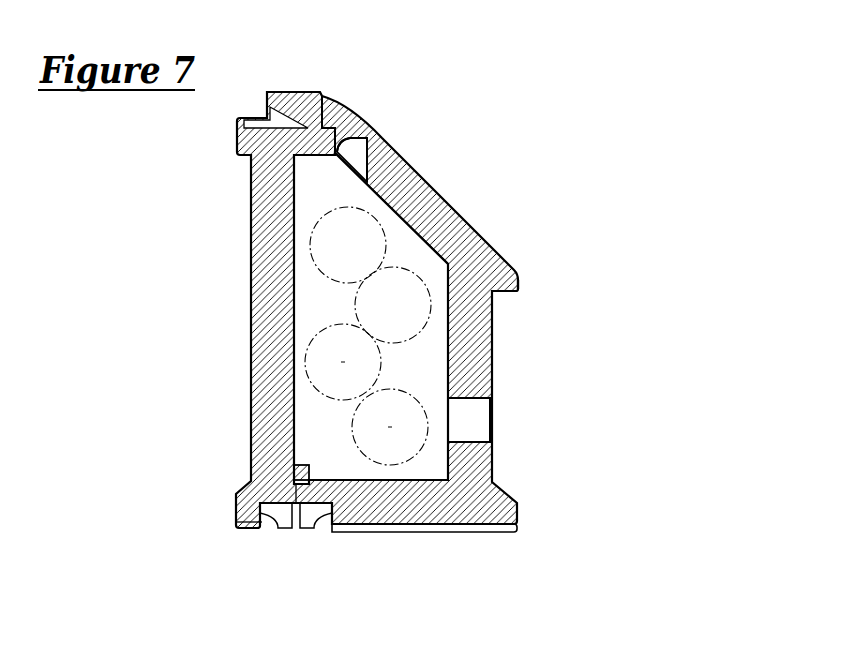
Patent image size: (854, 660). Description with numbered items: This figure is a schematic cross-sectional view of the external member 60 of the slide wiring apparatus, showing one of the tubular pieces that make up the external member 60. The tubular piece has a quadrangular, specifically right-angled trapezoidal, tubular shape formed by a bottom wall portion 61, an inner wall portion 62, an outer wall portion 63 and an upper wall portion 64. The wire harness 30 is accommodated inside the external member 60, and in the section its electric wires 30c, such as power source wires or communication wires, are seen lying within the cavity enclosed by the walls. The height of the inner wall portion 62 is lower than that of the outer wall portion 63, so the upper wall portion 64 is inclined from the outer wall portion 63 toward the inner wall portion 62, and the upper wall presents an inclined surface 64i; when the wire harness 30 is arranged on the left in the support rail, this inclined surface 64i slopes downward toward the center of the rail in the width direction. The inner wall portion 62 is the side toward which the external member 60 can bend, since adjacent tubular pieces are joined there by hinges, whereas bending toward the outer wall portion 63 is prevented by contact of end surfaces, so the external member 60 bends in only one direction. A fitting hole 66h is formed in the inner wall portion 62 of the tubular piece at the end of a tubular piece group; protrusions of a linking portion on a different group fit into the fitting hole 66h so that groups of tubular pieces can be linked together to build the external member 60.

The external member 60 is at (547, 197).
The bottom wall portion 61 is at (387, 500).
The inner wall portion 62 is at (480, 331).
The outer wall portion 63 is at (270, 347).
The upper wall portion 64 is at (400, 185).
The inclined surface 64i is at (440, 193).
The fitting hole 66h is at (470, 398).
The wire harness 30 is at (350, 300).
The electric wires 30c is at (368, 427).